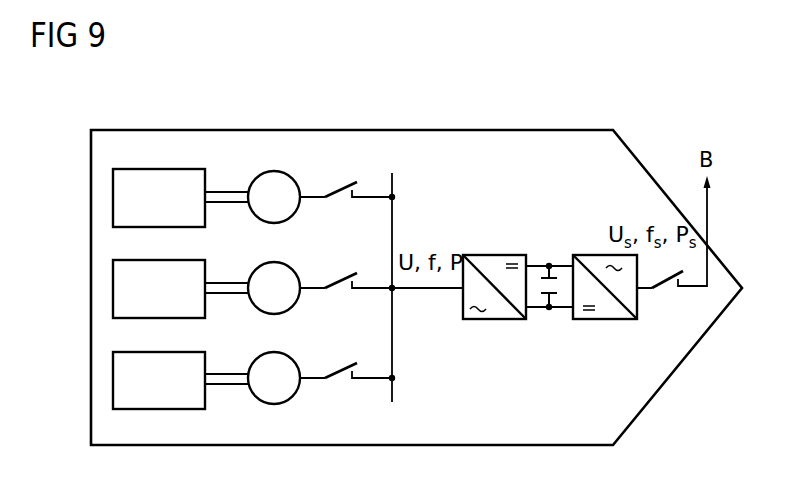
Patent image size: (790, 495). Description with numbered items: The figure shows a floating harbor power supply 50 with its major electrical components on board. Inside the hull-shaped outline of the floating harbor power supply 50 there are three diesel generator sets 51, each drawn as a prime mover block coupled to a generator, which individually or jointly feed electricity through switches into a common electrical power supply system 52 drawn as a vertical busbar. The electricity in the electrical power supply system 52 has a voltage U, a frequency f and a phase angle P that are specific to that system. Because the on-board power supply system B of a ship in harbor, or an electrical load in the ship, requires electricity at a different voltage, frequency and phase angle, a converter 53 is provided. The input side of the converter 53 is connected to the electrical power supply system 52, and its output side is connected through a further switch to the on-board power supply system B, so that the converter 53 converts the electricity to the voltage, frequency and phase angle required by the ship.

The floating harbor power supply 50 is at (74, 118).
The diesel generator set 51 is at (242, 158).
The electrical power supply system 52 is at (393, 216).
The converter 53 is at (544, 233).